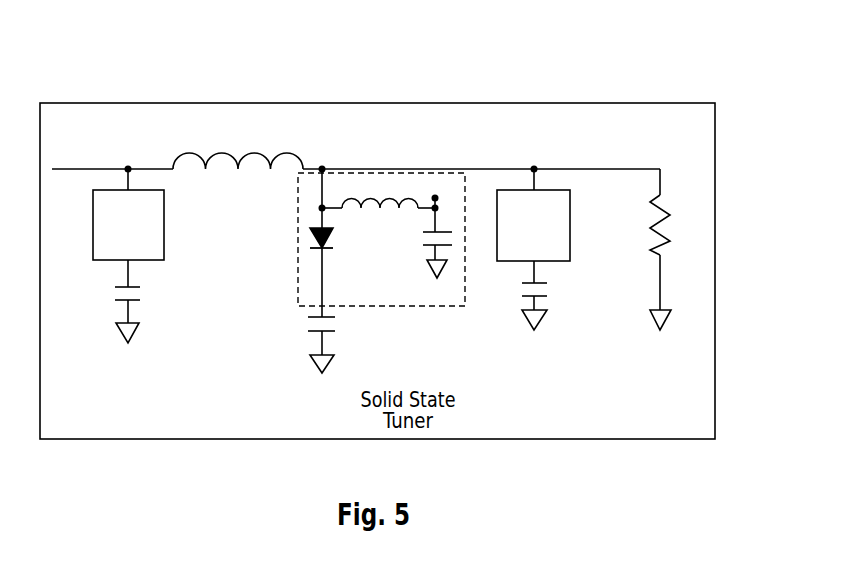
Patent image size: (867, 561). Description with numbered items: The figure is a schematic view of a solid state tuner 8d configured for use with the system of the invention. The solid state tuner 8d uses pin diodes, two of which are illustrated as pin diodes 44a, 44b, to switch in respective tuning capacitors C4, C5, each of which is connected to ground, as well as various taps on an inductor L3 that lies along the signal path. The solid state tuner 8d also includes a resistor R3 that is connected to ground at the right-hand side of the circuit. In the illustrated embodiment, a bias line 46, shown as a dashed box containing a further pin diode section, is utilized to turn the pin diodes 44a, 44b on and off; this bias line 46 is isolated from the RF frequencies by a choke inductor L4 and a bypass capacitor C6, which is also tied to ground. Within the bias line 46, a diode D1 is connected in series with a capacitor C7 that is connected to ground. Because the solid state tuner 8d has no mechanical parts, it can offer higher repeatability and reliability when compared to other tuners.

The solid state tuner 8d is at (686, 76).
The pin diode 44a is at (164, 225).
The pin diode 44b is at (570, 225).
The bias line 46 is at (298, 254).
The inductor L3 is at (238, 148).
The choke inductor L4 is at (378, 192).
The tuning capacitor C4 is at (146, 301).
The tuning capacitor C5 is at (520, 295).
The bypass capacitor C6 is at (422, 237).
The capacitor C7 is at (309, 344).
The diode D1 is at (340, 272).
The resistor R3 is at (678, 249).